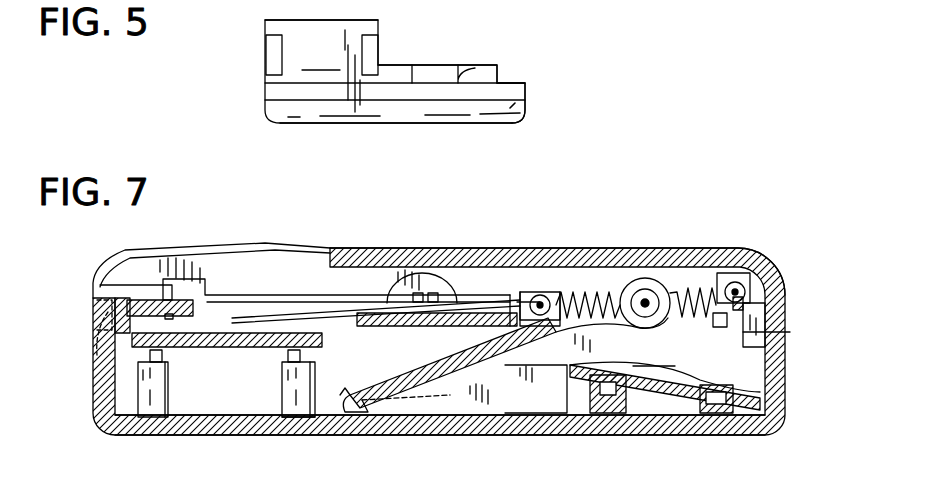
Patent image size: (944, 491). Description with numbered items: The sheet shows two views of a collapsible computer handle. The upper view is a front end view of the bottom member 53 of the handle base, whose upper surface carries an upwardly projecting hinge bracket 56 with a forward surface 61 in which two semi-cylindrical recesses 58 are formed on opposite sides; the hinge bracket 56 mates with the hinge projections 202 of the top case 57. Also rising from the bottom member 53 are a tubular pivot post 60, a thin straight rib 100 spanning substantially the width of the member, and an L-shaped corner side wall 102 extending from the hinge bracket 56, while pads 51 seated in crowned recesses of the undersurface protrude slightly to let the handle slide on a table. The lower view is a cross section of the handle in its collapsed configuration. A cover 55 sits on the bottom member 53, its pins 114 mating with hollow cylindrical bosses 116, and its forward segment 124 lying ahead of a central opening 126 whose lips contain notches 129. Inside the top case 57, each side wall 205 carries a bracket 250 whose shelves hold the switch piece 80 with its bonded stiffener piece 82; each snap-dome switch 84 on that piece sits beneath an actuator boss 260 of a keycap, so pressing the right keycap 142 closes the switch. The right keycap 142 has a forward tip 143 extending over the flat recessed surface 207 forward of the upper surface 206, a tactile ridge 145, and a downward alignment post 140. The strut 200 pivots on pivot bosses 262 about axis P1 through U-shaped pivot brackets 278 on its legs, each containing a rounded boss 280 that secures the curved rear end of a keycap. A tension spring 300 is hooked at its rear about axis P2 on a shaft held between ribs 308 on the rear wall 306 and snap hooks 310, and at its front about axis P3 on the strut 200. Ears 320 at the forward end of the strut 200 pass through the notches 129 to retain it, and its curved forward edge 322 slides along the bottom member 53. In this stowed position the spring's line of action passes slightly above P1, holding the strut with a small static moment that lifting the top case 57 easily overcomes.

In FIG. 5, the pads 51 is at (373, 124).
In FIG. 7, the pads 51 is at (185, 437).
In FIG. 5, the bottom member 53 is at (250, 108).
In FIG. 7, the bottom member 53 is at (592, 463).
In FIG. 7, the cover 55 is at (760, 372).
In FIG. 5, the hinge bracket 56 is at (265, 30).
In FIG. 7, the hinge bracket 56 is at (93, 377).
In FIG. 7, the top case 57 is at (762, 267).
In FIG. 5, the semi-cylindrical recesses 58 is at (270, 56).
In FIG. 7, the semi-cylindrical recesses 58 is at (105, 318).
In FIG. 5, the pivot post 60 is at (452, 79).
In FIG. 5, the forward surface 61 is at (321, 54).
In FIG. 7, the switch piece 80 is at (492, 327).
In FIG. 7, the stiffener piece 82 is at (517, 327).
In FIG. 7, the switches 84 is at (395, 307).
In FIG. 5, the rib 100 is at (492, 64).
In FIG. 7, the rib 100 is at (285, 420).
In FIG. 5, the corner side wall 102 is at (512, 82).
In FIG. 7, the pins 114 is at (277, 352).
In FIG. 7, the hollow cylindrical bosses 116 is at (278, 388).
In FIG. 7, the forward segment 124 is at (208, 327).
In FIG. 7, the central opening 126 is at (463, 397).
In FIG. 7, the notches 129 is at (507, 367).
In FIG. 7, the alignment post 140 is at (158, 287).
In FIG. 7, the right keycap 142 is at (303, 248).
In FIG. 7, the forward tip 143 is at (120, 260).
In FIG. 7, the ridge 145 is at (190, 242).
In FIG. 7, the strut 200 is at (544, 389).
In FIG. 7, the hinge projections 202 is at (95, 322).
In FIG. 7, the side wall 205 is at (515, 363).
In FIG. 7, the upper surface 206 is at (550, 247).
In FIG. 7, the recessed surface 207 is at (110, 283).
In FIG. 7, the bracket 250 is at (333, 305).
In FIG. 7, the actuator boss 260 is at (457, 270).
In FIG. 7, the pivot boss 262 is at (670, 313).
In FIG. 7, the pivot bracket 278 is at (677, 325).
In FIG. 7, the rounded boss 280 is at (658, 279).
In FIG. 7, the tension spring 300 is at (595, 262).
In FIG. 7, the rear wall 306 is at (766, 297).
In FIG. 7, the ribs 308 is at (777, 303).
In FIG. 7, the snap hooks 310 is at (790, 332).
In FIG. 7, the ears 320 is at (392, 397).
In FIG. 7, the curved forward edge 322 is at (337, 407).
In FIG. 7, the pivot axis P1 is at (644, 298).
In FIG. 7, the shaft axis P2 is at (735, 275).
In FIG. 7, the spring end axis P3 is at (535, 294).